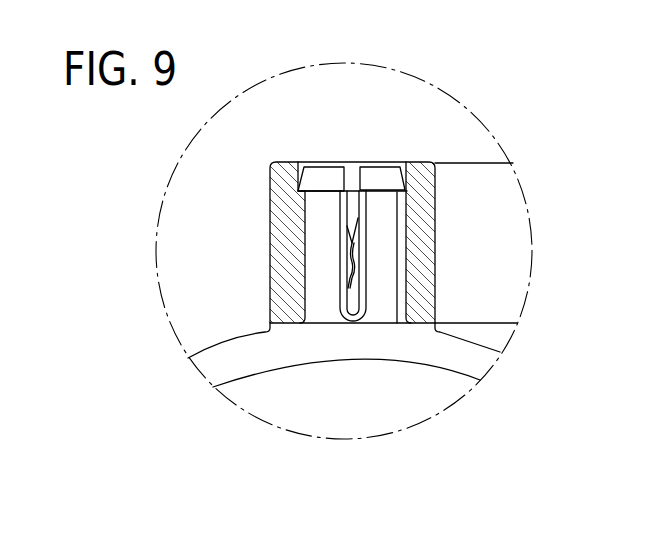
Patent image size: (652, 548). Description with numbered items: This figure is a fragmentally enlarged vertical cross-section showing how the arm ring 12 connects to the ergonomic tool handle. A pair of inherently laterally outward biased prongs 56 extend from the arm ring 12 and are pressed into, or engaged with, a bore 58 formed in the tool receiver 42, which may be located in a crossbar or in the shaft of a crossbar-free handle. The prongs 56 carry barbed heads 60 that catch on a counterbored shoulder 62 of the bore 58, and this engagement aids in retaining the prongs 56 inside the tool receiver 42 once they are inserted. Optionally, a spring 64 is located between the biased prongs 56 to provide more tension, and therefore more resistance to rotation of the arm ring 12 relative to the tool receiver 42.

The arm ring 12 is at (471, 360).
The tool receiver 42 is at (468, 191).
The inherently laterally outward biased prongs 56 is at (378, 300).
The bore 58 is at (290, 213).
The barbed heads 60 is at (312, 177).
The counterbored shoulder 62 is at (405, 192).
The spring 64 is at (352, 244).